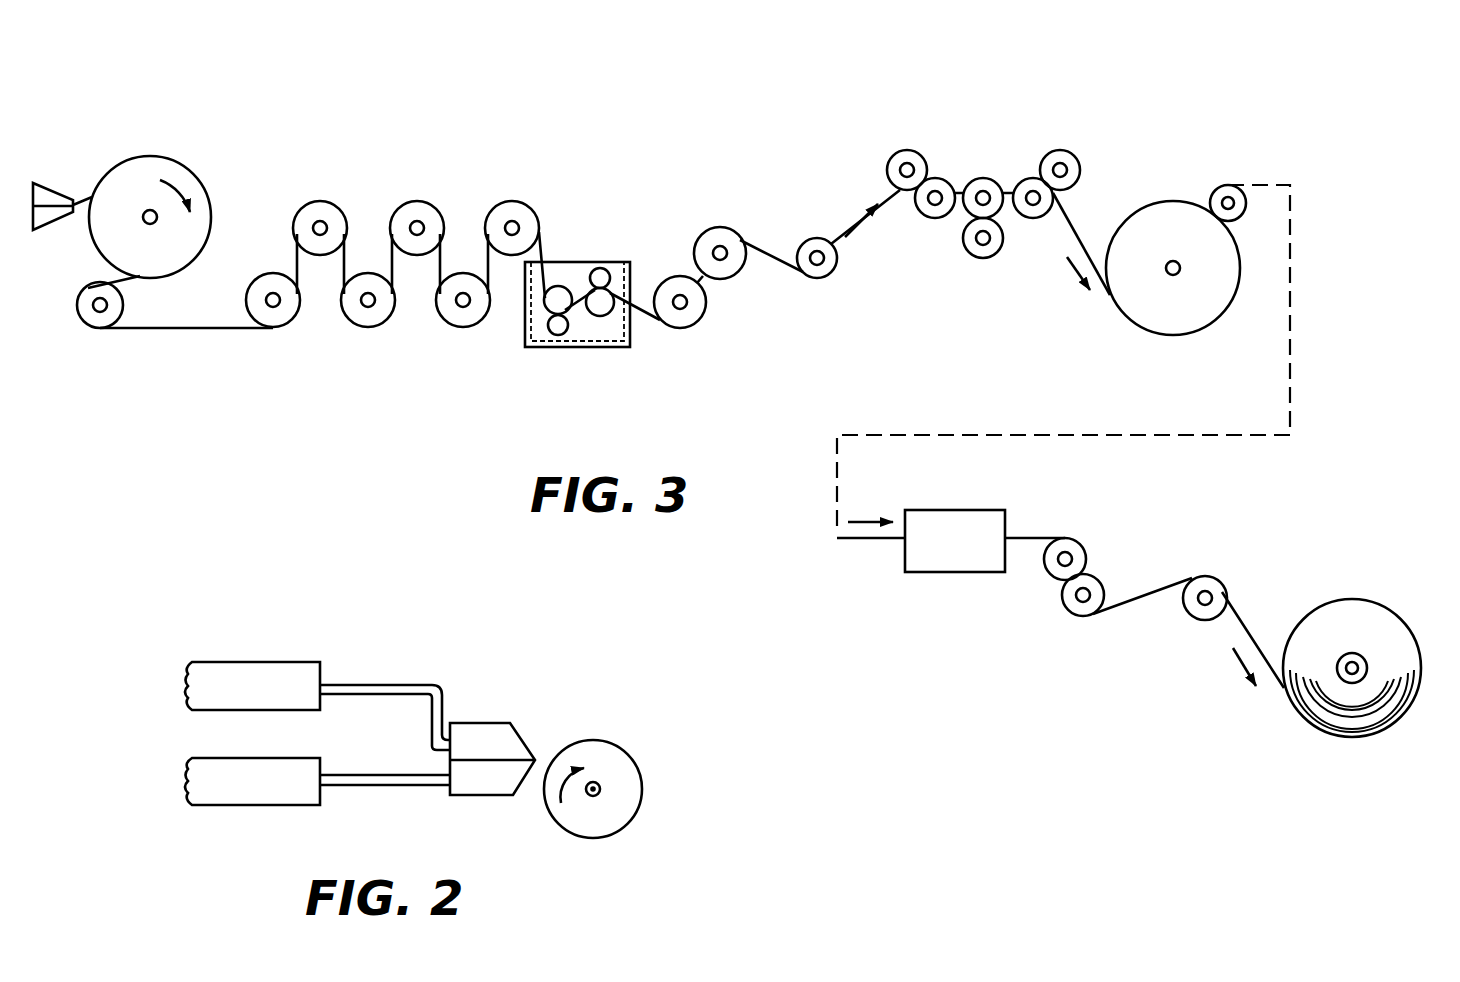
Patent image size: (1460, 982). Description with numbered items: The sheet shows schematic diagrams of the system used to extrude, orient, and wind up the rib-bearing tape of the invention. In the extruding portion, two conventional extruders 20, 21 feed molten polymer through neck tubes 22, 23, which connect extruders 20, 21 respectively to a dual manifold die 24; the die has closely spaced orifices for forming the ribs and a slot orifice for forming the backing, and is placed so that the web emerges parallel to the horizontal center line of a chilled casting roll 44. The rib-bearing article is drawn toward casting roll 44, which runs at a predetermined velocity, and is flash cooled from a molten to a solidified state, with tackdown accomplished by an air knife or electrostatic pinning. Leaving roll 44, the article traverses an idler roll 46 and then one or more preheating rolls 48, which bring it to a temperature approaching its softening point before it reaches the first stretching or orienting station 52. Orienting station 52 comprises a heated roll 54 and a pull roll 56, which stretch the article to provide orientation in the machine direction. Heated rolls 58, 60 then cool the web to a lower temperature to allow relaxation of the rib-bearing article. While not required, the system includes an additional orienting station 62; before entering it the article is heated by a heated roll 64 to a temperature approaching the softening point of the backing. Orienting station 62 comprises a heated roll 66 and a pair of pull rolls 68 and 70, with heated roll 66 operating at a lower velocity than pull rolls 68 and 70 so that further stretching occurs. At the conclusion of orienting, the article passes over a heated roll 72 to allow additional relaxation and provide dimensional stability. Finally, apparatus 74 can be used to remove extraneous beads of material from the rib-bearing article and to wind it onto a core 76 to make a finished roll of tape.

In FIG. 2, the extruder 20 is at (267, 672).
In FIG. 2, the extruder 21 is at (247, 800).
In FIG. 2, the neck tube 22 is at (407, 682).
In FIG. 2, the neck tube 23 is at (403, 786).
In FIG. 3, the dual manifold die 24 is at (51, 176).
In FIG. 2, the dual manifold die 24 is at (508, 718).
In FIG. 3, the chilled casting roll 44 is at (170, 168).
In FIG. 2, the chilled casting roll 44 is at (620, 760).
In FIG. 3, the idler roll 46 is at (101, 330).
In FIG. 3, the preheating rolls 48 is at (548, 192).
In FIG. 3, the orienting station 52 is at (603, 319).
In FIG. 3, the heated roll 54 is at (562, 290).
In FIG. 3, the pull roll 56 is at (637, 323).
In FIG. 3, the heated roll 58 is at (692, 314).
In FIG. 3, the heated roll 60 is at (733, 268).
In FIG. 3, the orienting station 62 is at (990, 182).
In FIG. 3, the heated roll 64 is at (813, 240).
In FIG. 3, the heated roll 66 is at (927, 212).
In FIG. 3, the pull roll 68 is at (970, 212).
In FIG. 3, the pull roll 70 is at (1037, 214).
In FIG. 3, the heated roll 72 is at (1193, 320).
In FIG. 3, the bead removal and winding apparatus 74 is at (966, 566).
In FIG. 3, the core 76 is at (1387, 620).